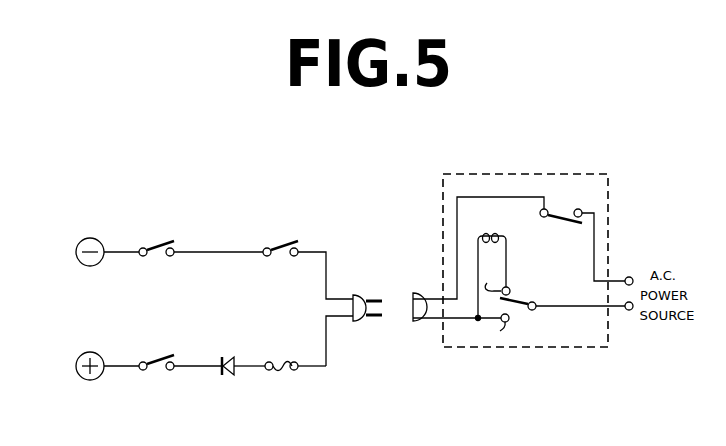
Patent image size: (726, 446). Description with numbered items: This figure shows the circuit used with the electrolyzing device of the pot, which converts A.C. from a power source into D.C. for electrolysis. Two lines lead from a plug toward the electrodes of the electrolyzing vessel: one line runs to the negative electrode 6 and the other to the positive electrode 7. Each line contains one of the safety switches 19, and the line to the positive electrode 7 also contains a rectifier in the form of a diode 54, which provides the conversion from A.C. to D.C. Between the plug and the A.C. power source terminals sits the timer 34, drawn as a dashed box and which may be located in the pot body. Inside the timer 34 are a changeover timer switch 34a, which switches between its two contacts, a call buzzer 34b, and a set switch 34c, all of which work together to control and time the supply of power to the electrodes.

The negative electrode 6 is at (70, 226).
The positive electrode 7 is at (70, 340).
The safety switches 19 is at (165, 242).
The diode 54 is at (227, 374).
The timer 34 is at (515, 347).
The changeover timer switch 34a is at (523, 297).
The call buzzer 34b is at (492, 231).
The set switch 34c is at (562, 223).